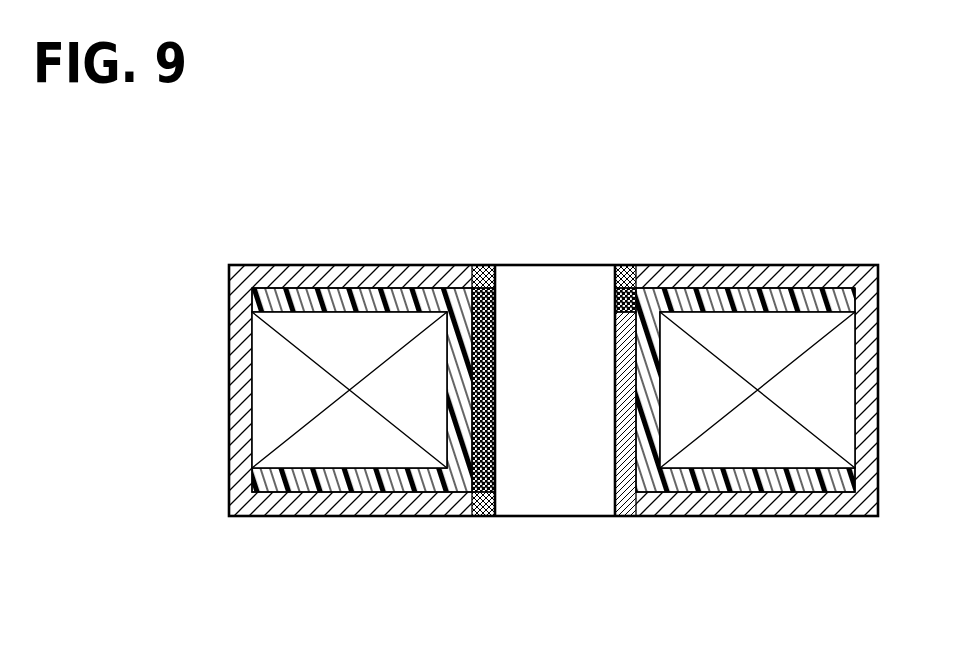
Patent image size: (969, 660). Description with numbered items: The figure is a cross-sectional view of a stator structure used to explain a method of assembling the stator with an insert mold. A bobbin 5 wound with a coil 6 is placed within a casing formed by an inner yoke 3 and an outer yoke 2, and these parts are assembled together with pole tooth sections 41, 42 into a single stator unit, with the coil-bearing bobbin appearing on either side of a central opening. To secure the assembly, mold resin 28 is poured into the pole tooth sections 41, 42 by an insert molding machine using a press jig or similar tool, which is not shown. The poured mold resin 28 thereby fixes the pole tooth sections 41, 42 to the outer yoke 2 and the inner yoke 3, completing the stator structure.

The outer yoke 2 is at (820, 511).
The inner yoke 3 is at (325, 266).
The bobbin 5 is at (324, 484).
The coil 6 is at (317, 389).
The mold resin 28 is at (495, 334).
The pole tooth section 41 is at (620, 516).
The pole tooth section 42 is at (487, 270).